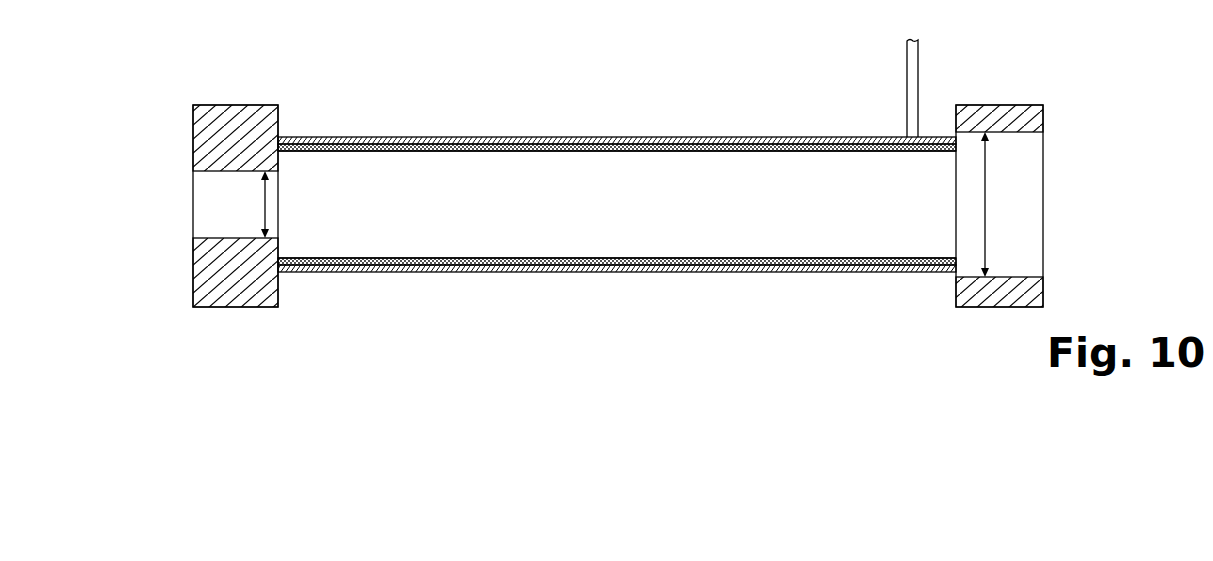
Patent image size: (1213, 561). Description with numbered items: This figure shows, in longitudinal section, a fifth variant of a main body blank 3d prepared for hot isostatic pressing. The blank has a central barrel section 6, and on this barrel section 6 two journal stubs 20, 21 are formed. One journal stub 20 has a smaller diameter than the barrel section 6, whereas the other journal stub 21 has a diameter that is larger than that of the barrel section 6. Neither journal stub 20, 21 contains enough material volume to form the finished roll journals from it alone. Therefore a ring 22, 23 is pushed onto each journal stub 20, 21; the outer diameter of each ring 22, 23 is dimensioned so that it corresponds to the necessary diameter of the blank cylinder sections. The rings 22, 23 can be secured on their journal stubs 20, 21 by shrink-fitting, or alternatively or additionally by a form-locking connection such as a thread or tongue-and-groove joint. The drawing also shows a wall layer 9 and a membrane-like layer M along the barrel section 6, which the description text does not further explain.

The main body blank 3d is at (617, 174).
The barrel section 6 is at (649, 199).
The tube wall 9 is at (810, 138).
The membrane M is at (785, 138).
The journal stub 20 is at (189, 158).
The journal stub 21 is at (1031, 175).
The ring 22 is at (240, 104).
The ring 23 is at (1047, 105).